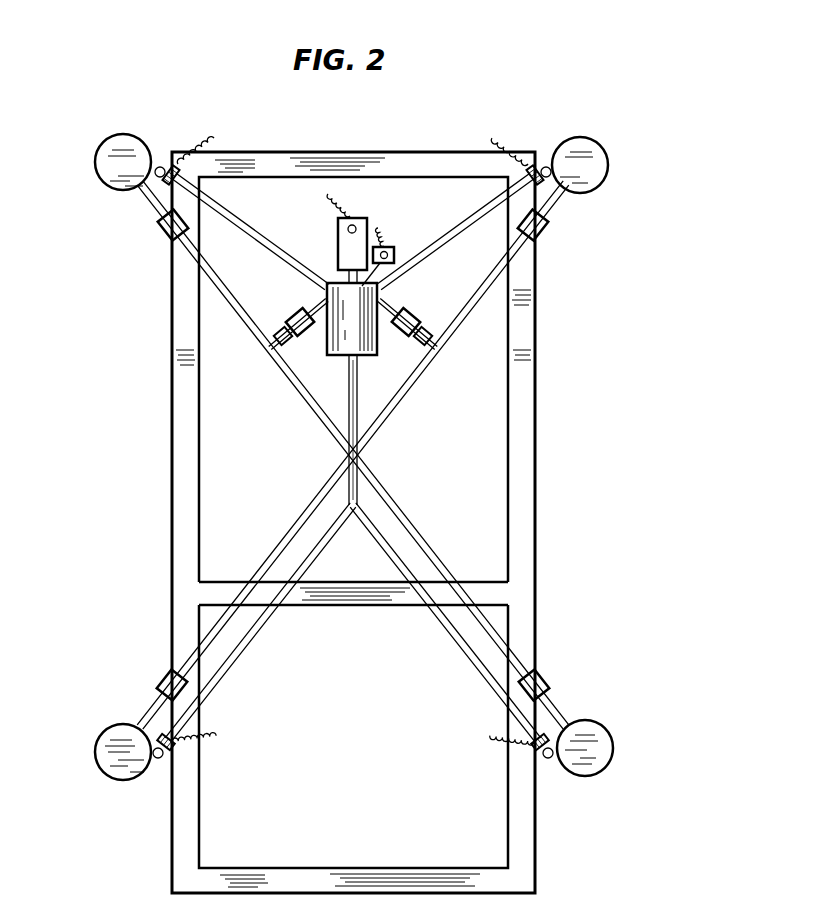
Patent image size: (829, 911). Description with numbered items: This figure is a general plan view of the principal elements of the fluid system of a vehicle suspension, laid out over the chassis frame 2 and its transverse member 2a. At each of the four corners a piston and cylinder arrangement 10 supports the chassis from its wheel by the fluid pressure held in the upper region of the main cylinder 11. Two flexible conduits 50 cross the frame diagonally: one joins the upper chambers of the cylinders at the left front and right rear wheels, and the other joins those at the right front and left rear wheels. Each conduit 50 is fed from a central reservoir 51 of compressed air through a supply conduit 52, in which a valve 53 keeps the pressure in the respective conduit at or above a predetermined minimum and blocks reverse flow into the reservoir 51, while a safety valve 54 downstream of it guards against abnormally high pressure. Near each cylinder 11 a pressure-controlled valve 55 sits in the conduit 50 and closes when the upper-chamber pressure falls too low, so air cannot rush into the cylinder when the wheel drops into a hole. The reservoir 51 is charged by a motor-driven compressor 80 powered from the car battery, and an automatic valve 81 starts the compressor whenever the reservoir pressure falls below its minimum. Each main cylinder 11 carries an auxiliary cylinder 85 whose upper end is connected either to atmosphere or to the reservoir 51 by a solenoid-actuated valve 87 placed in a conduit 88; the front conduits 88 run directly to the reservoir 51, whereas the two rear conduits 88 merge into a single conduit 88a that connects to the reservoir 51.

The window frame 2 is at (330, 151).
The transverse frame bar 2a is at (352, 606).
The piston and cylinder arrangement 10 is at (143, 140).
The main cylinder 11 is at (100, 180).
The flexible conduit 50 is at (236, 307).
The reservoir 51 is at (342, 356).
The supply conduit 52 is at (312, 298).
The valve 53 is at (290, 314).
The safety valve 54 is at (288, 341).
The pressure-controlled valve 55 is at (168, 230).
The motor-driven compressor 80 is at (337, 243).
The automatic valve 81 is at (390, 246).
The auxiliary cylinder 85 is at (164, 166).
The solenoid-actuated valve 87 is at (178, 168).
The conduit 88 is at (265, 240).
The conduit 88a is at (366, 376).